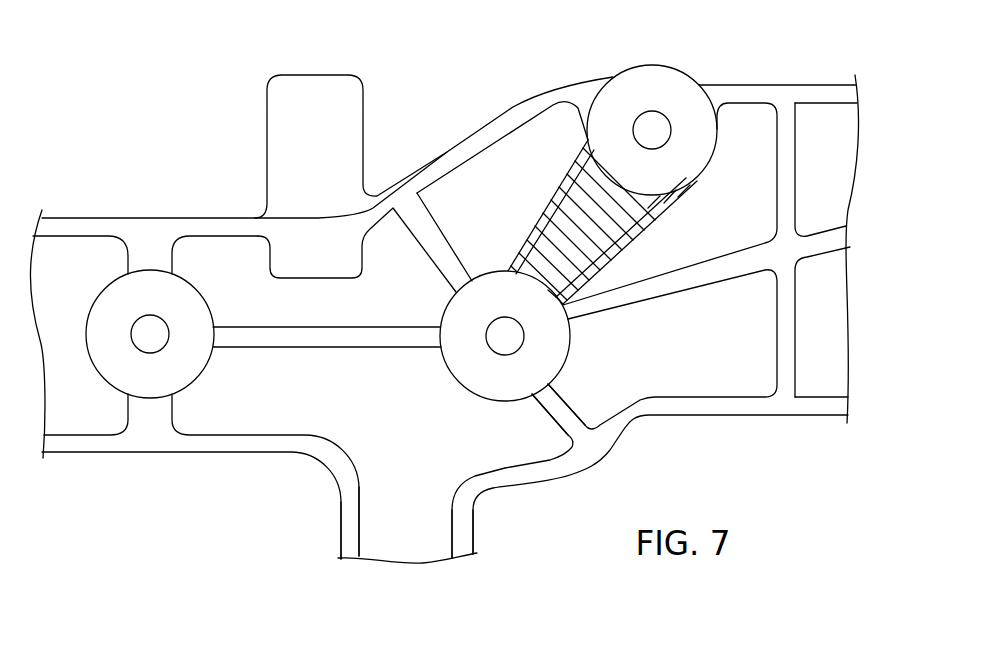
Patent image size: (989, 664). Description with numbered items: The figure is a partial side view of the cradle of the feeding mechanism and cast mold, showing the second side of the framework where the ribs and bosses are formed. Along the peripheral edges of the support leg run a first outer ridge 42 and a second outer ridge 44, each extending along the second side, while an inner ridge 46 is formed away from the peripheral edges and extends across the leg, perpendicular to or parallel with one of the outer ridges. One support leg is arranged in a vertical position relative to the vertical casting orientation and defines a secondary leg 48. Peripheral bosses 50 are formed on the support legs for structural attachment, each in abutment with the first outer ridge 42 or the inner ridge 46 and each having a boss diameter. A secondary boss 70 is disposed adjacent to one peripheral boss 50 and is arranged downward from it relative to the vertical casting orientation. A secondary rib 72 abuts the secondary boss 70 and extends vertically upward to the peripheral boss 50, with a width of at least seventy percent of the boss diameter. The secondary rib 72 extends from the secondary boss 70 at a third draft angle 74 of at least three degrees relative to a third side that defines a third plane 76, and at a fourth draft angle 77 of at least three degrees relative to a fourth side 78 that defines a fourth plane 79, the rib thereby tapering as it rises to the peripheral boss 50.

The first outer ridge 42 is at (78, 230).
The second outer ridge 44 is at (73, 447).
The inner ridge 46 is at (292, 344).
The secondary leg 48 is at (348, 523).
The peripheral boss 50 is at (140, 311).
The secondary boss 70 is at (492, 310).
The secondary rib 72 is at (583, 167).
The third draft angle 74 is at (563, 193).
The third plane 76 is at (512, 263).
The fourth draft angle 77 is at (610, 243).
The fourth side 78 is at (643, 208).
The fourth plane 79 is at (582, 279).